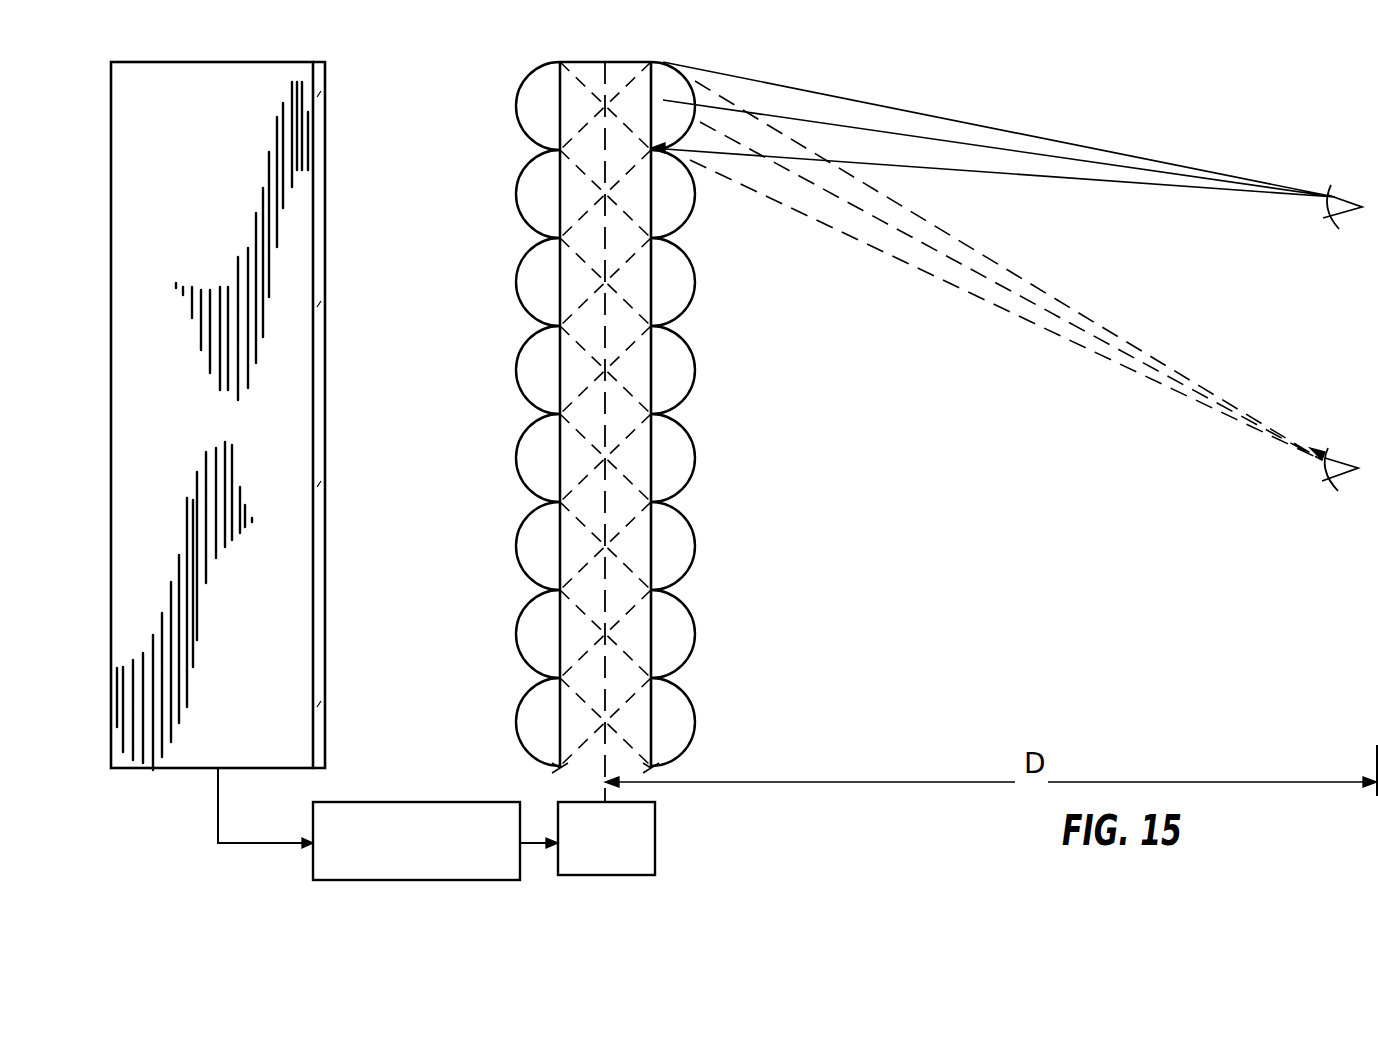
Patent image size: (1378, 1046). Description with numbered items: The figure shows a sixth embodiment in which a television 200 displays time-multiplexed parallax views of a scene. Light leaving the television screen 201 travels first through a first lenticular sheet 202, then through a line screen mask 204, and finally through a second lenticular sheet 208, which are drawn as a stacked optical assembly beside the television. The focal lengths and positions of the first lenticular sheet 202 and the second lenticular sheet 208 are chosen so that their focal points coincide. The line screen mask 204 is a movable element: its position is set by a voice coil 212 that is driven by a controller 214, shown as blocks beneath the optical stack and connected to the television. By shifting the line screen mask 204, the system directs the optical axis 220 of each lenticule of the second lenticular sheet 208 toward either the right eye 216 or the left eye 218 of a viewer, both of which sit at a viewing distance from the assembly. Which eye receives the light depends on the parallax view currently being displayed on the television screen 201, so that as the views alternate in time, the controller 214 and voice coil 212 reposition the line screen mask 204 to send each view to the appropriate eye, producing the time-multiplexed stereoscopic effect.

The television 200 is at (262, 62).
The television screen 201 is at (325, 62).
The first lenticular sheet 202 is at (558, 62).
The line screen mask 204 is at (605, 62).
The second lenticular sheet 208 is at (651, 62).
The voice coil 212 is at (655, 848).
The controller 214 is at (384, 802).
The right eye 216 is at (1343, 193).
The left eye 218 is at (1377, 433).
The optical axis 220 is at (1063, 163).